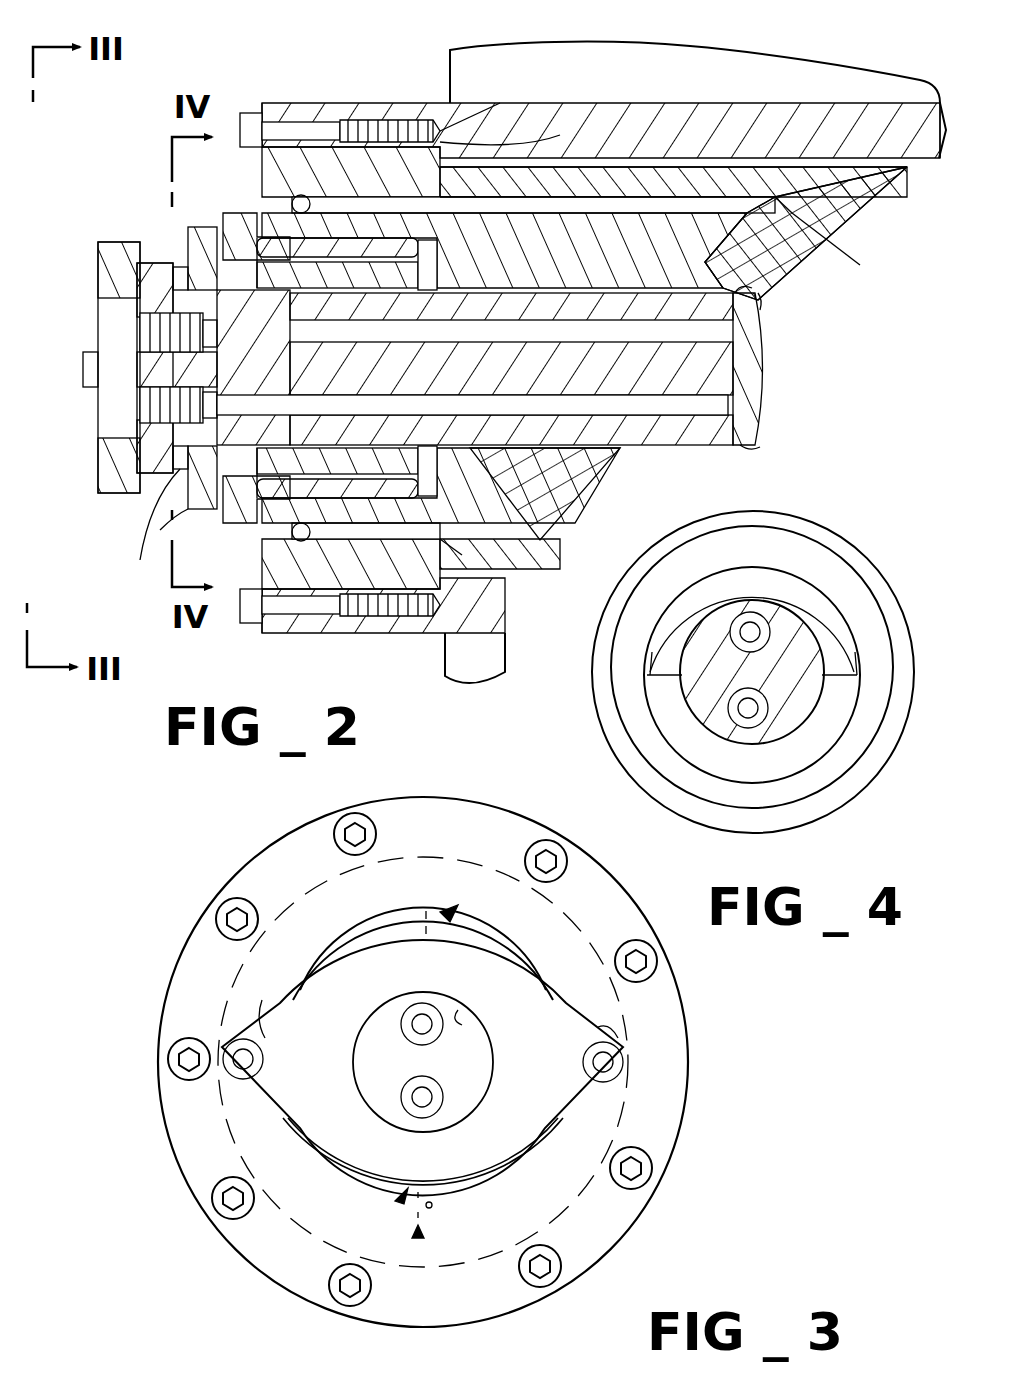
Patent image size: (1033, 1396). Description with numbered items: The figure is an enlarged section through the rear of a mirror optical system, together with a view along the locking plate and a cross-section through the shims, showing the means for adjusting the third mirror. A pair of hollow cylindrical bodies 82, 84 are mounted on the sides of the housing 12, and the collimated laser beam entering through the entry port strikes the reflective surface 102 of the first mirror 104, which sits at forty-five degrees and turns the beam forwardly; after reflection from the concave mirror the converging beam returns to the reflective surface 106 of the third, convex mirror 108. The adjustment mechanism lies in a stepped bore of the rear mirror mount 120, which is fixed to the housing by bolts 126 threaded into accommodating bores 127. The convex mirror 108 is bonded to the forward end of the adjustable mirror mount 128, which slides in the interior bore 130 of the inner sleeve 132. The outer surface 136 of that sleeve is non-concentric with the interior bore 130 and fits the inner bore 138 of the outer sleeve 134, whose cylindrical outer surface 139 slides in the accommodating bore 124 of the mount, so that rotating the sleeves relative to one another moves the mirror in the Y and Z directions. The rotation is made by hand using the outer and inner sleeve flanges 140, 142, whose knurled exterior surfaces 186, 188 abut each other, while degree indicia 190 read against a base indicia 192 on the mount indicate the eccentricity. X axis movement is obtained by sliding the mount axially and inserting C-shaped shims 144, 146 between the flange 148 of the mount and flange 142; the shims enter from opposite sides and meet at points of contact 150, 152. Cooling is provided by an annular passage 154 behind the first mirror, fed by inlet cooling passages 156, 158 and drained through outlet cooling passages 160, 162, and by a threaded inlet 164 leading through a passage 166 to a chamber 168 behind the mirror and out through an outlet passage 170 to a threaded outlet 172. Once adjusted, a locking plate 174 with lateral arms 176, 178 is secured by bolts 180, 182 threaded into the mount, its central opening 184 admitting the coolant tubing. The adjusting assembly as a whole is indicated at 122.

In FIG. 2, the housing 12 is at (360, 103).
In FIG. 2, the cylindrical body 82 is at (480, 68).
In FIG. 2, the cylindrical body 84 is at (447, 676).
In FIG. 2, the reflective surface 102 is at (870, 205).
In FIG. 2, the first mirror 104 is at (828, 170).
In FIG. 2, the reflective surface 106 is at (765, 395).
In FIG. 2, the third, convex mirror 108 is at (765, 447).
In FIG. 2, the rear mirror mount 120 is at (298, 103).
In FIG. 3, the rear mirror mount 120 is at (462, 818).
In FIG. 2, the eccentric adjusting assembly 122 is at (145, 150).
In FIG. 2, the accommodating bore 124 is at (335, 220).
In FIG. 2, the bolts 126 is at (248, 113).
In FIG. 3, the bolts 126 is at (657, 961).
In FIG. 2, the accommodating bore 127 is at (385, 120).
In FIG. 2, the adjustable mirror mount 128 is at (578, 296).
In FIG. 4, the adjustable mirror mount 128 is at (690, 683).
In FIG. 3, the adjustable mirror mount 128 is at (480, 1077).
In FIG. 2, the interior bore 130 is at (360, 395).
In FIG. 2, the inner sleeve 132 is at (395, 444).
In FIG. 2, the outer sleeve 134 is at (540, 160).
In FIG. 2, the outer surface 136 is at (225, 300).
In FIG. 2, the inner bore 138 is at (335, 476).
In FIG. 2, the cylindrical outer surface 139 is at (565, 125).
In FIG. 2, the outer sleeve flange 140 is at (240, 218).
In FIG. 4, the outer sleeve flange 140 is at (806, 527).
In FIG. 3, the outer sleeve flange 140 is at (383, 915).
In FIG. 2, the inner sleeve flange 142 is at (200, 235).
In FIG. 4, the inner sleeve flange 142 is at (835, 570).
In FIG. 3, the inner sleeve flange 142 is at (468, 945).
In FIG. 2, the shim 144 is at (180, 270).
In FIG. 4, the shim 144 is at (720, 590).
In FIG. 2, the shim 146 is at (140, 560).
In FIG. 4, the shim 146 is at (868, 763).
In FIG. 2, the flange 148 is at (150, 500).
In FIG. 4, the point of contact 150 is at (650, 690).
In FIG. 4, the point of contact 152 is at (845, 635).
In FIG. 2, the annular passage 154 is at (740, 235).
In FIG. 2, the inlet cooling passage 156 is at (294, 536).
In FIG. 2, the inlet cooling passage 158 is at (540, 535).
In FIG. 2, the outlet cooling passage 160 is at (685, 208).
In FIG. 2, the outlet cooling passage 162 is at (475, 135).
In FIG. 2, the threaded inlet 164 is at (160, 400).
In FIG. 3, the threaded inlet 164 is at (410, 1094).
In FIG. 2, the passage 166 is at (538, 400).
In FIG. 2, the chamber 168 is at (765, 337).
In FIG. 2, the outlet passage 170 is at (494, 333).
In FIG. 2, the threaded outlet 172 is at (160, 320).
In FIG. 3, the threaded outlet 172 is at (410, 1018).
In FIG. 2, the locking plate 174 is at (110, 460).
In FIG. 3, the locking plate 174 is at (505, 995).
In FIG. 3, the arm 176 is at (268, 1010).
In FIG. 3, the arm 178 is at (612, 1033).
In FIG. 2, the bolt 180 is at (85, 355).
In FIG. 3, the bolt 180 is at (245, 1082).
In FIG. 3, the bolt 182 is at (610, 1072).
In FIG. 3, the opening 184 is at (460, 1012).
In FIG. 3, the knurled exterior surface 186 is at (540, 1150).
In FIG. 3, the knurled exterior surface 188 is at (475, 1188).
In FIG. 3, the indicia 190 is at (450, 908).
In FIG. 3, the base indicia 192 is at (430, 1245).